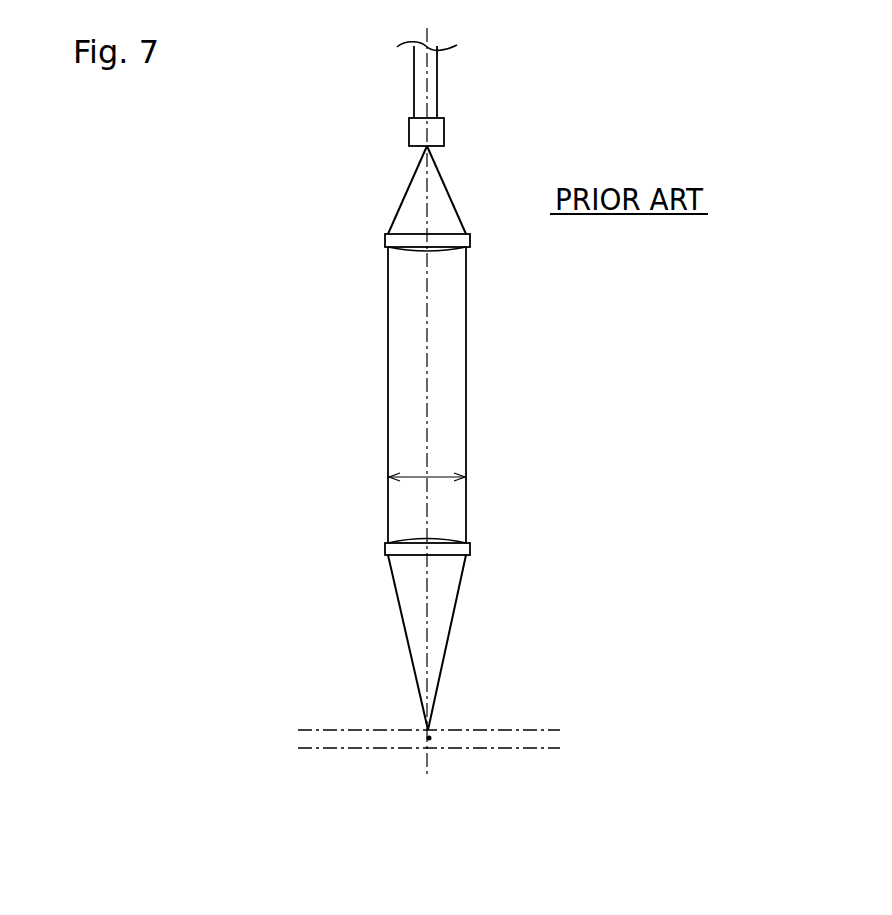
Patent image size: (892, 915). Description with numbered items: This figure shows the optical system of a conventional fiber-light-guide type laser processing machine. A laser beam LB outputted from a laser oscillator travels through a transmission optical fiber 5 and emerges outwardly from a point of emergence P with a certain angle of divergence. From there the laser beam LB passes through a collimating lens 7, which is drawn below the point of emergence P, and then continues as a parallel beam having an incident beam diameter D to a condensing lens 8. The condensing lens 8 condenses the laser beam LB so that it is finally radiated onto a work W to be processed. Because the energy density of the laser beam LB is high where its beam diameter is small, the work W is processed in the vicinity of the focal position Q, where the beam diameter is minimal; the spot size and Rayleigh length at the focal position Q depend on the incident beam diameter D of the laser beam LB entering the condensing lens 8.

The transmission optical fiber 5 is at (414, 80).
The point of emergence P is at (425, 147).
The collimating lens 7 is at (385, 240).
The laser beam LB is at (388, 373).
The incident beam diameter D is at (427, 463).
The condensing lens 8 is at (387, 553).
The focal position Q is at (428, 740).
The work W is at (493, 730).